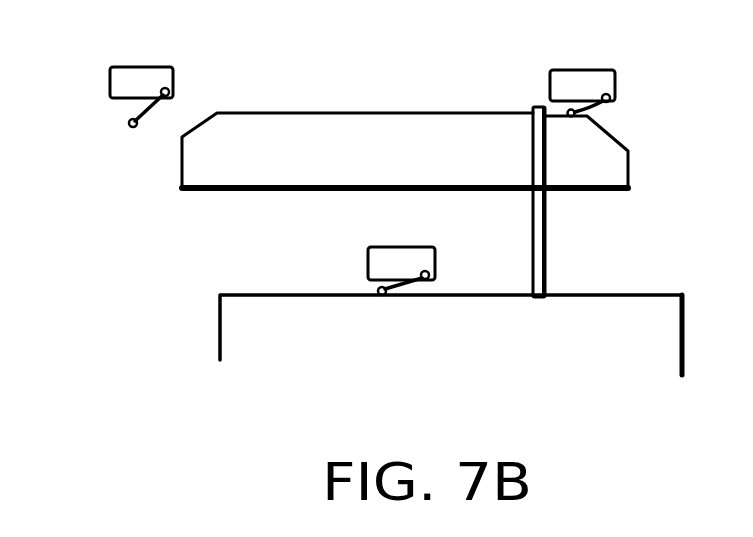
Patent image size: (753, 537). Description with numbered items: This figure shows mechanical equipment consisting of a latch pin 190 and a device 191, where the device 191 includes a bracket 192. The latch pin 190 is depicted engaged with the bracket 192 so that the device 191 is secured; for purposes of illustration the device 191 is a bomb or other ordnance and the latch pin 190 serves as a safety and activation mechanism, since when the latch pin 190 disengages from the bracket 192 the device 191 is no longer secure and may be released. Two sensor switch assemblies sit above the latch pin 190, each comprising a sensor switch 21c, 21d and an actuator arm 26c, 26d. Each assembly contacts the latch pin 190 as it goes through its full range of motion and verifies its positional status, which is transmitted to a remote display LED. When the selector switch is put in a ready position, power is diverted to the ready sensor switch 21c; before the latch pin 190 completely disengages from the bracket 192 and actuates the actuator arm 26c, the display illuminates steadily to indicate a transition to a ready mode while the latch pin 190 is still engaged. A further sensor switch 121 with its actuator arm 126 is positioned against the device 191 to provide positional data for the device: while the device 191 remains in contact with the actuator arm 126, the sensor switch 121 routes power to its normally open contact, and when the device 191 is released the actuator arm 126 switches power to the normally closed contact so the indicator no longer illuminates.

The latch pin 190 is at (182, 172).
The device 191 is at (218, 327).
The bracket 192 is at (547, 237).
The sensor switch 21c is at (147, 67).
The sensor switch 21d is at (573, 68).
The actuator arm 26c is at (128, 121).
The actuator arm 26d is at (593, 114).
The sensor switch 121 is at (403, 258).
The actuator arm 126 is at (378, 282).